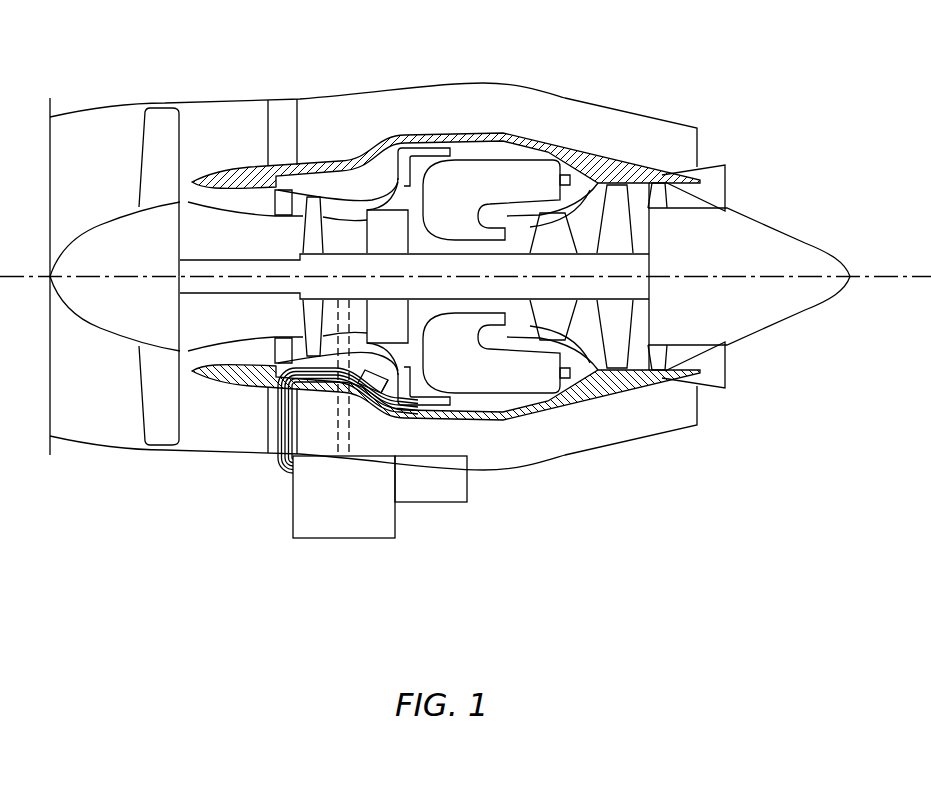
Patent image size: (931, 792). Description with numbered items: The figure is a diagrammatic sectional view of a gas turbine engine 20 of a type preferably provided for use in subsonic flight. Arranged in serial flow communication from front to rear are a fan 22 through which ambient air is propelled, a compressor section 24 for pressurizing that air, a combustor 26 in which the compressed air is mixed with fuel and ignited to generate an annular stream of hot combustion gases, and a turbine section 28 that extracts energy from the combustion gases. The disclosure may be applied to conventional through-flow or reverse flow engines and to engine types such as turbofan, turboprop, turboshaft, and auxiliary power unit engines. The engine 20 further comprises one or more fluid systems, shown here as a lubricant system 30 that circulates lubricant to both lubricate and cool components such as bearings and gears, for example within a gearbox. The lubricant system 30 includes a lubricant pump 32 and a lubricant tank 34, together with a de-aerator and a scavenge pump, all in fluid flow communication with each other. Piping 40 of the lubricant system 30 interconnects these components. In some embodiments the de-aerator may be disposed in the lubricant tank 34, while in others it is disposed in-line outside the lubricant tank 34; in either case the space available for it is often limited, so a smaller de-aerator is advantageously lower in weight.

The gas turbine engine 20 is at (720, 100).
The fan 22 is at (140, 388).
The compressor section 24 is at (340, 208).
The combustor 26 is at (487, 173).
The turbine section 28 is at (590, 383).
The lubricant system 30 is at (265, 482).
The lubricant pump 32 is at (368, 393).
The lubricant tank 34 is at (385, 396).
The piping 40 is at (276, 412).